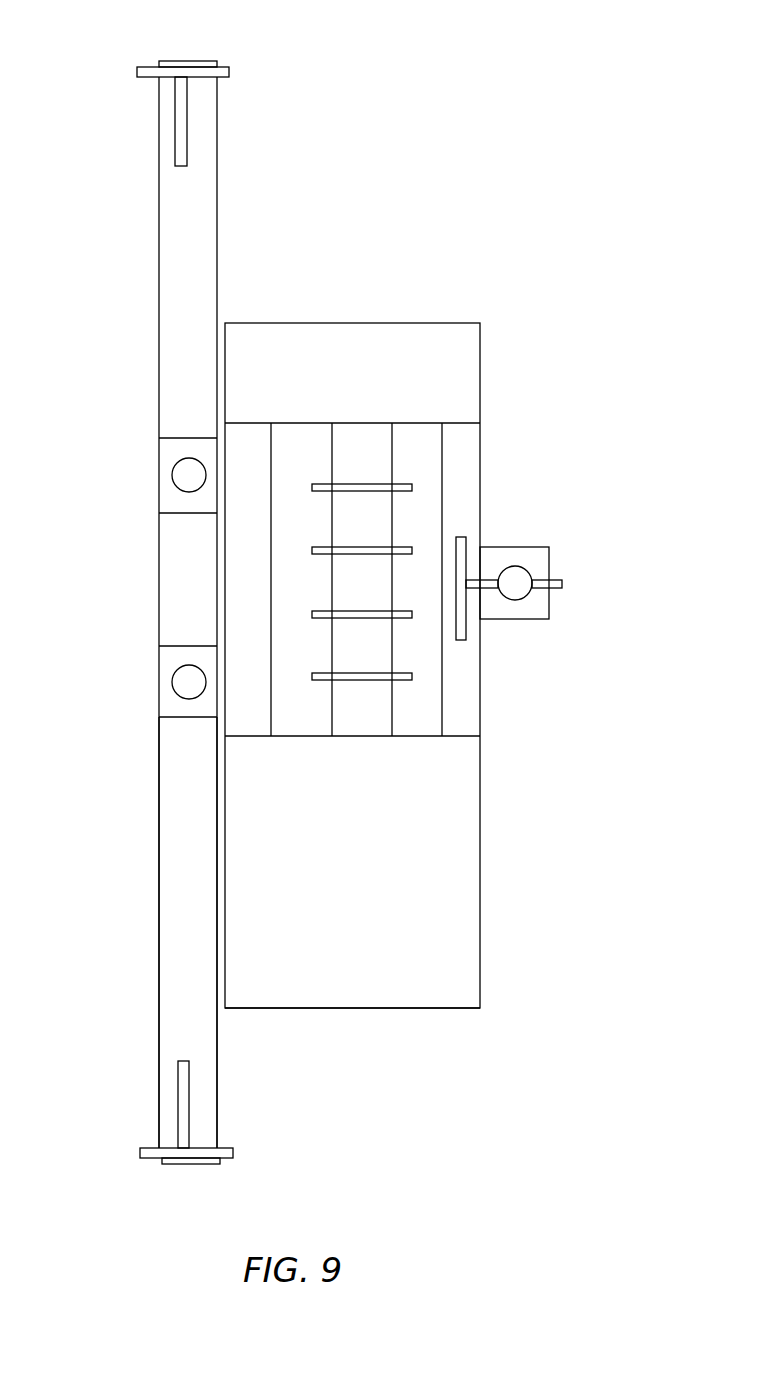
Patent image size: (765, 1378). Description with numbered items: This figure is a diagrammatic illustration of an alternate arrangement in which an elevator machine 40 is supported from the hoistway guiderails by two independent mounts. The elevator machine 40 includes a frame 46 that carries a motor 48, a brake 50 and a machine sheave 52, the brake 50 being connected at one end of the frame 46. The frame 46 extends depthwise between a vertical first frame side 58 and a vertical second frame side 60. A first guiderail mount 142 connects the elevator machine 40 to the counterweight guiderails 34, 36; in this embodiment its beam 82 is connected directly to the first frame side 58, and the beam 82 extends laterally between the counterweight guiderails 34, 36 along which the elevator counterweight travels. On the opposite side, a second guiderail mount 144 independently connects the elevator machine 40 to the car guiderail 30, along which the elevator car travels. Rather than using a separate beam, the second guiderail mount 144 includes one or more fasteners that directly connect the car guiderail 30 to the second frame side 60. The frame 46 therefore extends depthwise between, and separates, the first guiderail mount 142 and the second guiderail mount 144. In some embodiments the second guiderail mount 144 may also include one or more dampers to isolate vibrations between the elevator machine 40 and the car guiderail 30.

The car guiderail 30 is at (562, 584).
The counterweight guiderail 34 is at (146, 1150).
The counterweight guiderail 36 is at (140, 69).
The elevator machine 40 is at (486, 812).
The frame 46 is at (486, 723).
The motor 48 is at (481, 937).
The brake 50 is at (481, 370).
The machine sheave 52 is at (392, 471).
The first frame side 58 is at (226, 590).
The second frame side 60 is at (481, 703).
The beam 82 is at (160, 903).
The first guiderail mount 142 is at (156, 275).
The second guiderail mount 144 is at (512, 541).